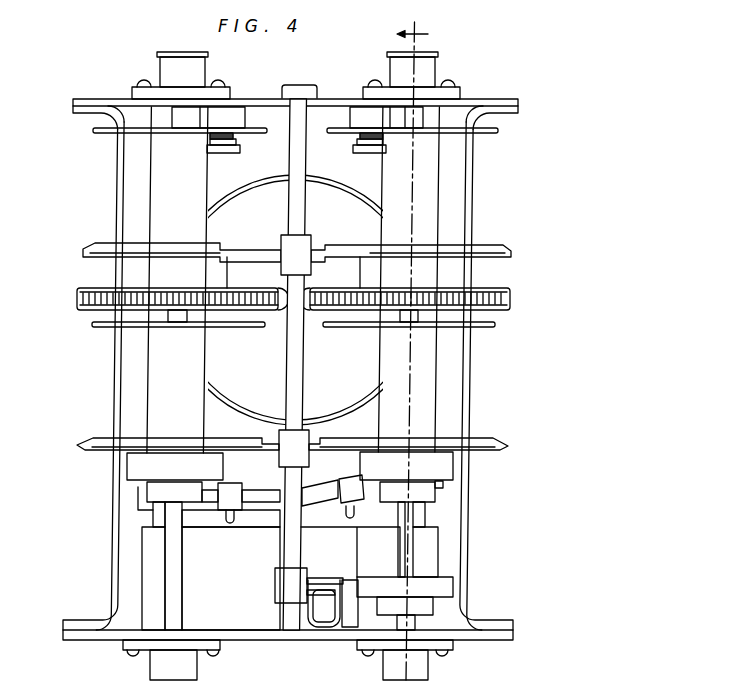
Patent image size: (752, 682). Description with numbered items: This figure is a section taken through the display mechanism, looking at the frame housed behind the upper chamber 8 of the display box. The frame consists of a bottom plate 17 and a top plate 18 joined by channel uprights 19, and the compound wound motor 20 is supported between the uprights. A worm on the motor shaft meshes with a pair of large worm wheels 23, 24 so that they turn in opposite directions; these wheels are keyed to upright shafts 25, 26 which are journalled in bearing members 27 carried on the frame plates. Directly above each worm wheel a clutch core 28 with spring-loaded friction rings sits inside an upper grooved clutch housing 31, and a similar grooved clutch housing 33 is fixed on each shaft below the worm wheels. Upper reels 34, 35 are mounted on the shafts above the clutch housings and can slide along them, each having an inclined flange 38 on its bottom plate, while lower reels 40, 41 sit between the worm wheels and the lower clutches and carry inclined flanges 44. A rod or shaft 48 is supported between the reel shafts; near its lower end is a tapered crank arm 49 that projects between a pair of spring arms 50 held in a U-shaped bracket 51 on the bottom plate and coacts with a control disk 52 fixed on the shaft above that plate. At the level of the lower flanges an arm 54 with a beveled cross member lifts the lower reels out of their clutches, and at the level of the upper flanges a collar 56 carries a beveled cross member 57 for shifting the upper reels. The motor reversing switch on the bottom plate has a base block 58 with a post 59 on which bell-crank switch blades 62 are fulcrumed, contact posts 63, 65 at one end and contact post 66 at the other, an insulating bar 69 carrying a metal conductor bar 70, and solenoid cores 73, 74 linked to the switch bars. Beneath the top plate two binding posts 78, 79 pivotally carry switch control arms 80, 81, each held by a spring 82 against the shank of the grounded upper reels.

The upper chamber 8 is at (401, 351).
The bottom plate 17 is at (490, 640).
The top plate 18 is at (480, 98).
The channel uprights 19 is at (473, 198).
The compound wound motor 20 is at (296, 300).
The worm wheel 23 is at (85, 292).
The worm wheel 24 is at (510, 292).
The upright shaft 25 is at (180, 582).
The upright shaft 26 is at (408, 553).
The bearing members 27 is at (190, 86).
The clutch core 28 is at (157, 485).
The clutch housing 31 is at (293, 289).
The clutch housing 33 is at (290, 466).
The upper reel 34 is at (180, 280).
The upper reel 35 is at (412, 279).
The inclined flange 38 is at (85, 253).
The lower reel 40 is at (181, 375).
The lower reel 41 is at (411, 382).
The inclined flange 44 is at (78, 446).
The rod or shaft 48 is at (300, 400).
The crank arm 49 is at (320, 598).
The spring arms 50 is at (335, 578).
The U-shaped bracket 51 is at (347, 590).
The control disk 52 is at (447, 587).
The arm 54 is at (306, 441).
The collar 56 is at (305, 248).
The beveled cross member 57 is at (244, 256).
The base block 58 is at (223, 605).
The bracket or post 59 is at (272, 520).
The switch blades 62 is at (320, 490).
The contact post 63 is at (123, 566).
The contact post 65 is at (278, 457).
The contact post 66 is at (420, 516).
The insulating bar 69 is at (225, 487).
The metal conductor bar 70 is at (223, 507).
The slidable core 73 is at (228, 519).
The slidable core 74 is at (350, 511).
The binding post 78 is at (226, 153).
The binding post 79 is at (368, 152).
The switch control arm 80 is at (236, 142).
The switch control arm 81 is at (358, 143).
The spring 82 is at (213, 136).